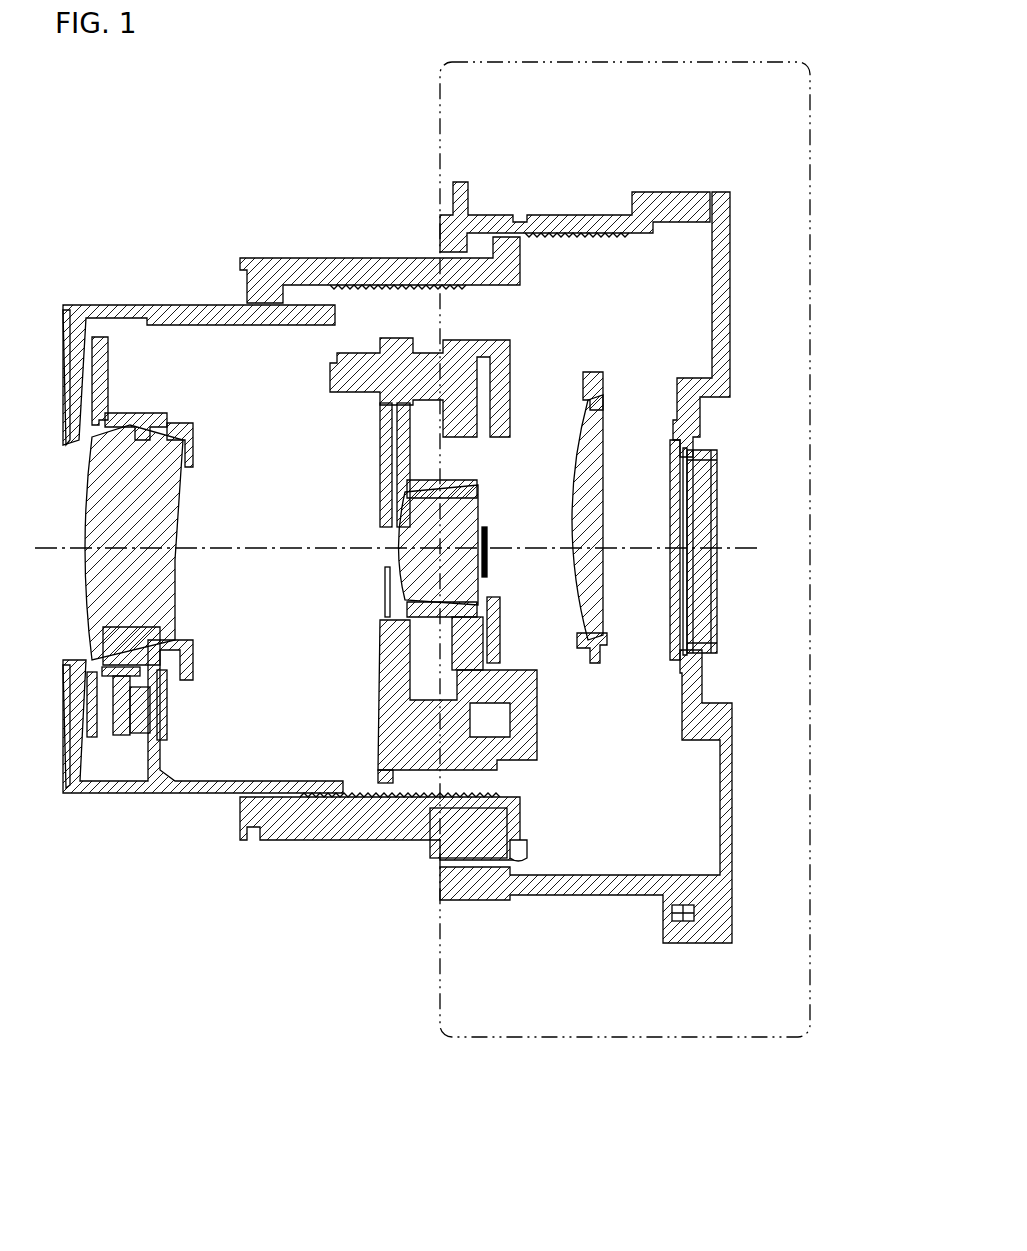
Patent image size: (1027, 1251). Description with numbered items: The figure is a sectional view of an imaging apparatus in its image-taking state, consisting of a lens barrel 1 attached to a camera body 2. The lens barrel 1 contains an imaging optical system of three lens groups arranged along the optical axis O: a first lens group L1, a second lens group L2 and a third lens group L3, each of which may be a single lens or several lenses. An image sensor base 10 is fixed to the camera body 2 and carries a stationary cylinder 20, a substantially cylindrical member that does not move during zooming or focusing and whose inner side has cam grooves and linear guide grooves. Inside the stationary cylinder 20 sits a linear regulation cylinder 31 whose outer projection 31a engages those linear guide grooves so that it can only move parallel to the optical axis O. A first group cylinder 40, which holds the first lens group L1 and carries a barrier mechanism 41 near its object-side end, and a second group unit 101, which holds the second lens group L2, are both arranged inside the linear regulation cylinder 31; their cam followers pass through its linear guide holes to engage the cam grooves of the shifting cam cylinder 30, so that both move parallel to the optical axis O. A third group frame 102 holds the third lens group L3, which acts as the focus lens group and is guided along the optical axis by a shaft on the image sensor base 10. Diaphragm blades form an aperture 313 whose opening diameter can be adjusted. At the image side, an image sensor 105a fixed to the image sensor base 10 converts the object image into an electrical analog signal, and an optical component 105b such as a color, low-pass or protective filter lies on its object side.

The lens barrel 1 is at (78, 824).
The camera body 2 is at (670, 1040).
The image sensor base 10 is at (721, 243).
The stationary cylinder 20 is at (580, 215).
The shifting cam cylinder 30 is at (410, 255).
The linear regulation cylinder 31 is at (350, 790).
The projection 31a is at (528, 856).
The first group cylinder 40 is at (178, 304).
The barrier mechanism 41 is at (78, 447).
The second group unit 101 is at (405, 325).
The third group frame 102 is at (590, 385).
The image sensor 105a is at (715, 582).
The optical component 105b is at (666, 525).
The aperture 313 is at (383, 558).
The first lens group L1 is at (112, 595).
The second lens group L2 is at (434, 560).
The third lens group L3 is at (593, 573).
The optical axis O is at (52, 546).